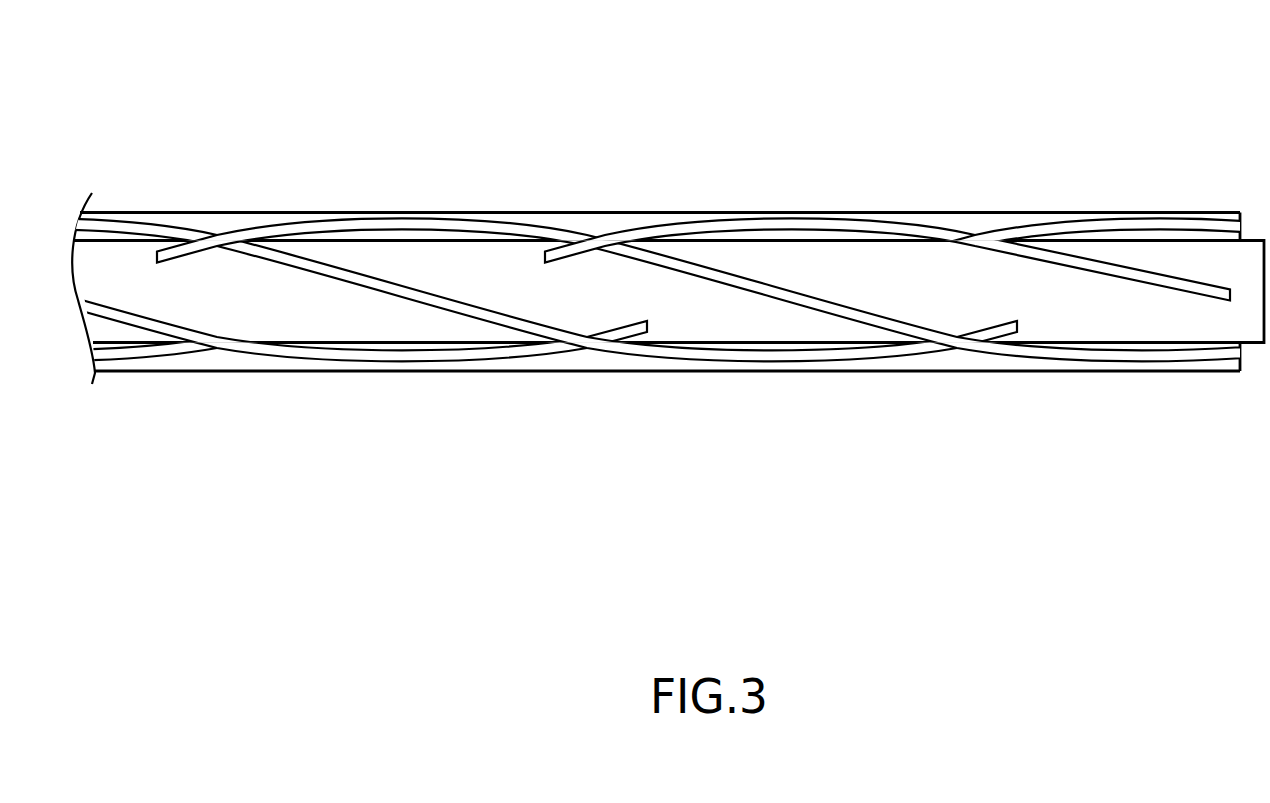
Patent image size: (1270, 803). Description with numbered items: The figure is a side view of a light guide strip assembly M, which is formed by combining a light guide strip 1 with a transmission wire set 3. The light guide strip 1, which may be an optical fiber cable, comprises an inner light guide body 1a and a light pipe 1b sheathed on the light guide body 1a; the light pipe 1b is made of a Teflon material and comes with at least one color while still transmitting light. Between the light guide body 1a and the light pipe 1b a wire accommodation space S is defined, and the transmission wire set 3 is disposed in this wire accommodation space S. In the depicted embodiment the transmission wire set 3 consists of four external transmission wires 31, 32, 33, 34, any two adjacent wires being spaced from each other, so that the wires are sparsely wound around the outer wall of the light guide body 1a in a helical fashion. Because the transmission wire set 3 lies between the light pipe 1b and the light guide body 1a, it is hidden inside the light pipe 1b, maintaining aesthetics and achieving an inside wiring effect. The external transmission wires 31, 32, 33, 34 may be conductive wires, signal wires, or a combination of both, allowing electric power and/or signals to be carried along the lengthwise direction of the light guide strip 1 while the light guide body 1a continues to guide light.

The light guide strip assembly M is at (635, 276).
The light guide strip 1 is at (668, 207).
The light guide body 1a is at (1072, 82).
The light pipe 1b is at (1008, 210).
The transmission wire set 3 is at (635, 373).
The external transmission wire 31 is at (748, 352).
The external transmission wire 32 is at (848, 310).
The external transmission wire 33 is at (1093, 262).
The external transmission wire 34 is at (1092, 340).
The wire accommodation space S is at (603, 356).